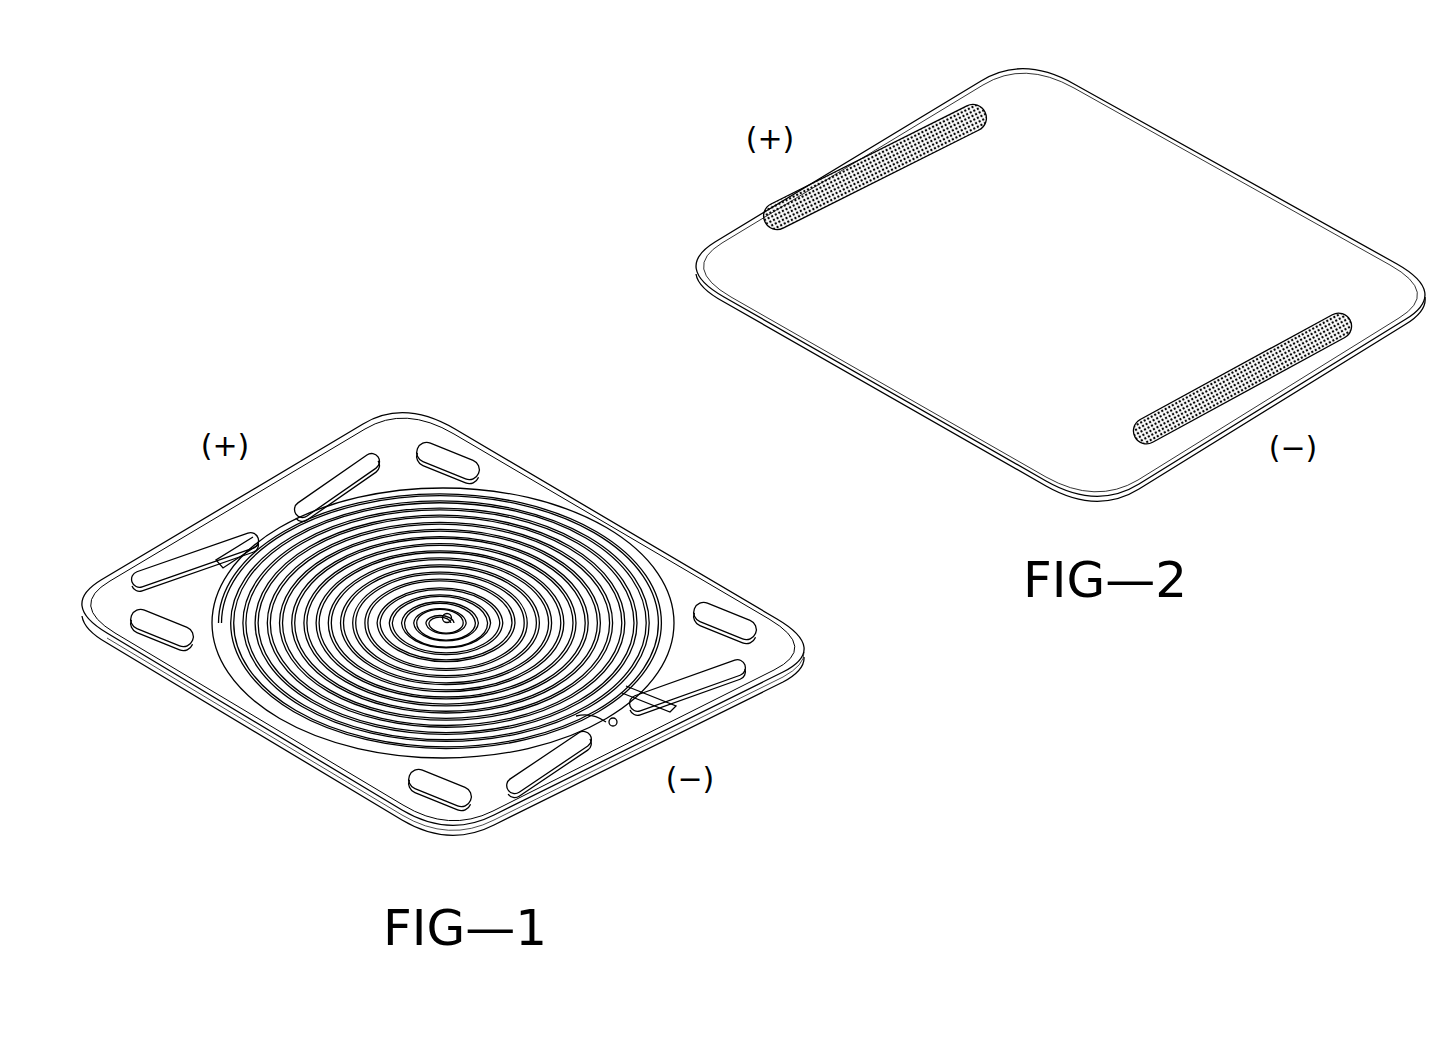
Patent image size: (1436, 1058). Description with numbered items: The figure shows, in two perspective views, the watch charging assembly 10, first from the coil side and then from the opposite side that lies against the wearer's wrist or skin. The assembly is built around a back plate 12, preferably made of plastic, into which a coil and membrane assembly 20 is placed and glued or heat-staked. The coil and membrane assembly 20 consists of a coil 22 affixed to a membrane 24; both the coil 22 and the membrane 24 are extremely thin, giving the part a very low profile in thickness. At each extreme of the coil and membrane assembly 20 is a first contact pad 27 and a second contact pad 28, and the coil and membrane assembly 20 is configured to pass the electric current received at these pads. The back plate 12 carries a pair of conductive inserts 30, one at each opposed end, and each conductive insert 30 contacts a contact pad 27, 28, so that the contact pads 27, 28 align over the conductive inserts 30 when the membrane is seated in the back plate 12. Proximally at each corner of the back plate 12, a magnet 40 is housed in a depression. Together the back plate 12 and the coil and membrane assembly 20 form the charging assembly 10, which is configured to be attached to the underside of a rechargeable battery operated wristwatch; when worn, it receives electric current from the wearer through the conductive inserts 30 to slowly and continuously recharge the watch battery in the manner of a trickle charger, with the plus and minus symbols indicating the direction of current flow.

In FIG. 1, the watch charging assembly 10 is at (157, 428).
In FIG. 2, the watch charging assembly 10 is at (678, 164).
In FIG. 1, the back plate 12 is at (620, 780).
In FIG. 2, the back plate 12 is at (1200, 217).
In FIG. 1, the coil and membrane assembly 20 is at (620, 557).
In FIG. 1, the coil 22 is at (537, 533).
In FIG. 1, the membrane 24 is at (220, 657).
In FIG. 1, the first contact pad 27 is at (325, 480).
In FIG. 1, the second contact pad 28 is at (692, 690).
In FIG. 2, the conductive insert 30 is at (915, 126).
In FIG. 1, the magnet 40 is at (442, 462).